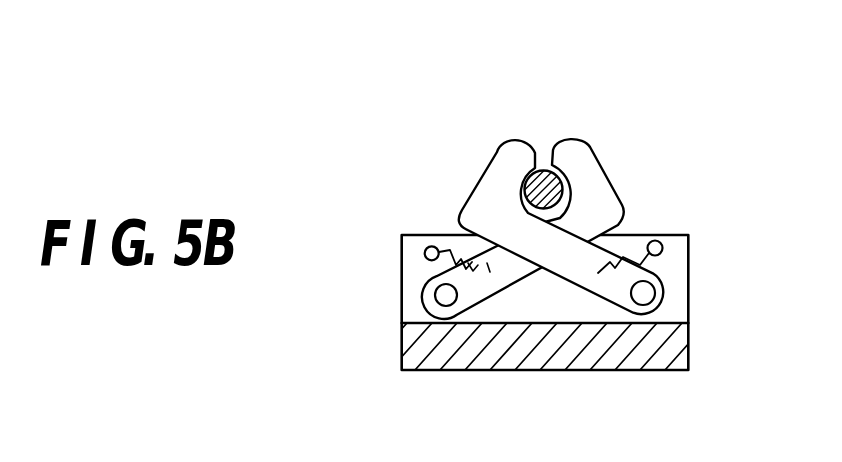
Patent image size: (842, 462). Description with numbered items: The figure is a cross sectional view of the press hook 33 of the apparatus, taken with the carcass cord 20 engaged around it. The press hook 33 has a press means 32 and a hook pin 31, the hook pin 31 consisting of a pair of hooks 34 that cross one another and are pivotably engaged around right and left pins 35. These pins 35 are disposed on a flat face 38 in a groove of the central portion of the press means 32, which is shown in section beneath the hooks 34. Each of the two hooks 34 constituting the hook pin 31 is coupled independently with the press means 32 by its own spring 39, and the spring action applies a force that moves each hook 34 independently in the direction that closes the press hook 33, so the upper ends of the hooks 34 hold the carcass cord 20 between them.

The carcass cord 20 is at (543, 170).
The hook pin 31 is at (620, 162).
The press means 32 is at (420, 235).
The press hook 33 is at (590, 162).
The hook 34 is at (490, 188).
The pin 35 is at (645, 292).
The flat face 38 is at (547, 305).
The spring 39 is at (432, 262).